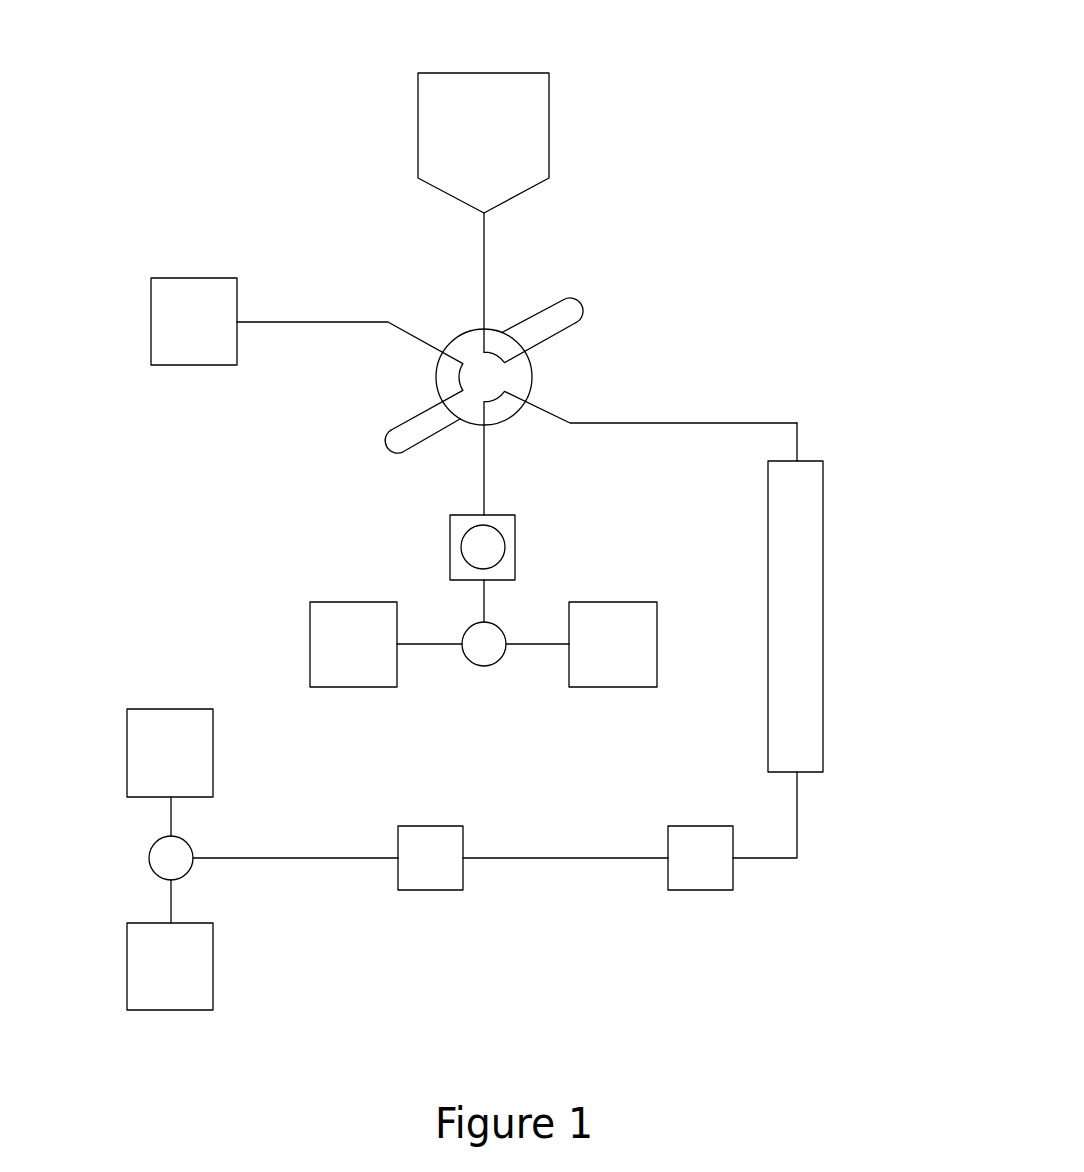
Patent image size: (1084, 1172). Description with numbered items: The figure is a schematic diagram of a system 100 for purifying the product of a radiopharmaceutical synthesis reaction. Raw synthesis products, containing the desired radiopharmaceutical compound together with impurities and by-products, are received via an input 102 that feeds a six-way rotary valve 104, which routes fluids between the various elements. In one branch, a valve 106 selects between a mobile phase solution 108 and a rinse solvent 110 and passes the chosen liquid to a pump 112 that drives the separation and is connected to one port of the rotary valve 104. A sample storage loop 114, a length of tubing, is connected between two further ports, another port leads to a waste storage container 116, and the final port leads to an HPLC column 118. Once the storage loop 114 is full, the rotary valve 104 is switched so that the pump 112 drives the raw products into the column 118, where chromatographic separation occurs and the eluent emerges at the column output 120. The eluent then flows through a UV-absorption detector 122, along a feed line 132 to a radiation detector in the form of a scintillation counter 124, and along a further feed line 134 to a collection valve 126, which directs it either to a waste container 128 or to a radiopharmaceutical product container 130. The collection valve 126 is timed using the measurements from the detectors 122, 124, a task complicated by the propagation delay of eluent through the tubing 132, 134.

The system 100 is at (783, 103).
The input 102 is at (549, 148).
The six-way rotary valve 104 is at (578, 386).
The valve 106 is at (495, 653).
The mobile phase solution 108 is at (328, 670).
The rinse solvent 110 is at (588, 670).
The pump 112 is at (515, 557).
The sample storage loop 114 is at (576, 304).
The waste storage container 116 is at (165, 349).
The HPLC column 118 is at (818, 547).
The column output 120 is at (814, 789).
The UV-absorption detector 122 is at (713, 890).
The scintillation counter 124 is at (442, 890).
The collection valve 126 is at (149, 859).
The waste container 128 is at (143, 777).
The radiopharmaceutical product container 130 is at (143, 993).
The feed line 132 is at (572, 858).
The feed line 134 is at (310, 858).